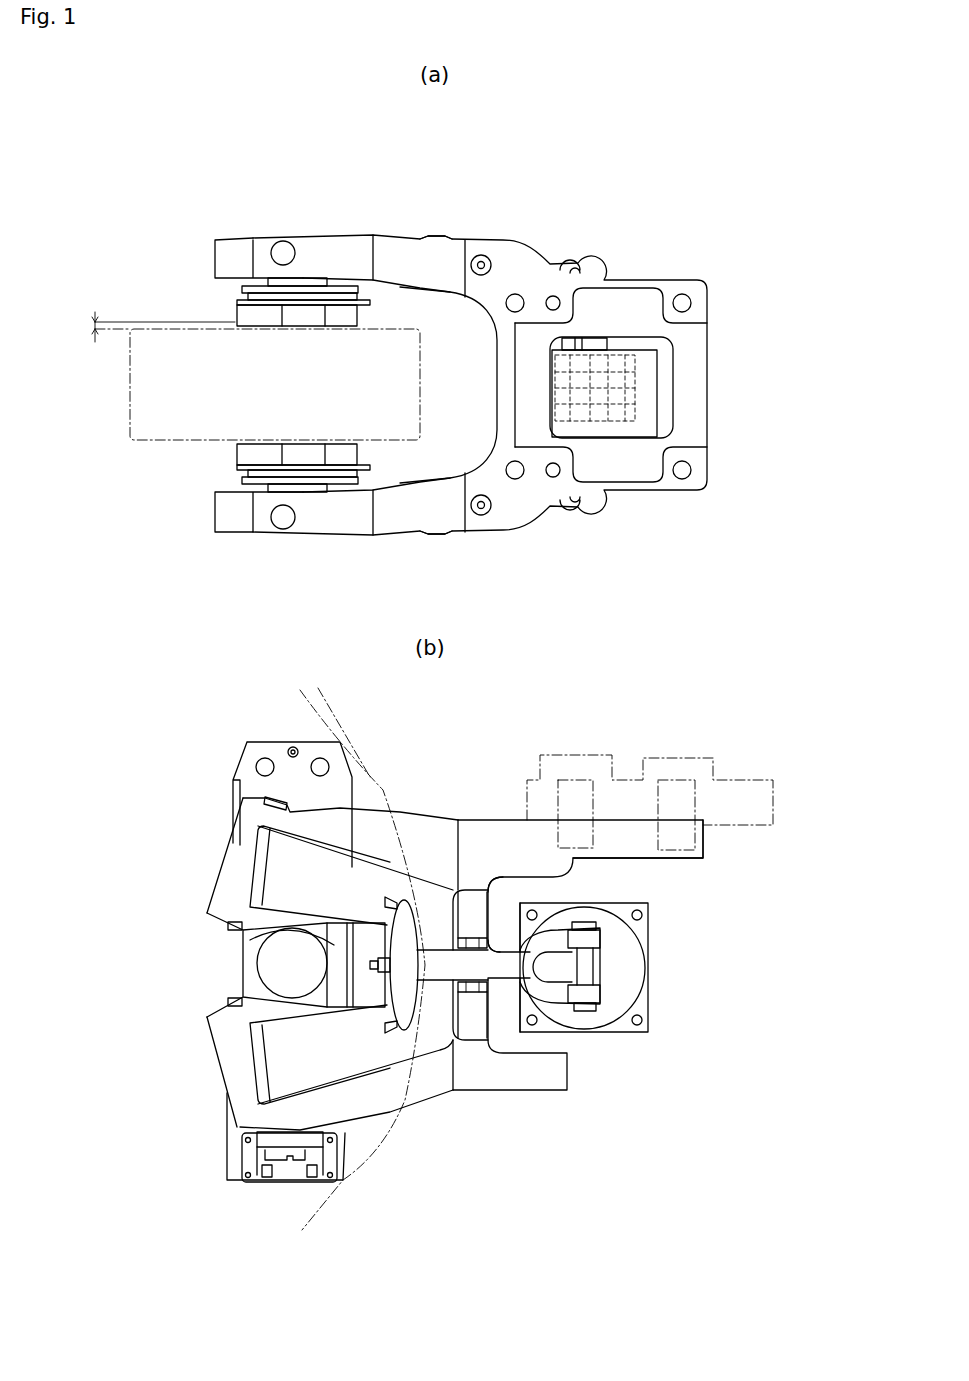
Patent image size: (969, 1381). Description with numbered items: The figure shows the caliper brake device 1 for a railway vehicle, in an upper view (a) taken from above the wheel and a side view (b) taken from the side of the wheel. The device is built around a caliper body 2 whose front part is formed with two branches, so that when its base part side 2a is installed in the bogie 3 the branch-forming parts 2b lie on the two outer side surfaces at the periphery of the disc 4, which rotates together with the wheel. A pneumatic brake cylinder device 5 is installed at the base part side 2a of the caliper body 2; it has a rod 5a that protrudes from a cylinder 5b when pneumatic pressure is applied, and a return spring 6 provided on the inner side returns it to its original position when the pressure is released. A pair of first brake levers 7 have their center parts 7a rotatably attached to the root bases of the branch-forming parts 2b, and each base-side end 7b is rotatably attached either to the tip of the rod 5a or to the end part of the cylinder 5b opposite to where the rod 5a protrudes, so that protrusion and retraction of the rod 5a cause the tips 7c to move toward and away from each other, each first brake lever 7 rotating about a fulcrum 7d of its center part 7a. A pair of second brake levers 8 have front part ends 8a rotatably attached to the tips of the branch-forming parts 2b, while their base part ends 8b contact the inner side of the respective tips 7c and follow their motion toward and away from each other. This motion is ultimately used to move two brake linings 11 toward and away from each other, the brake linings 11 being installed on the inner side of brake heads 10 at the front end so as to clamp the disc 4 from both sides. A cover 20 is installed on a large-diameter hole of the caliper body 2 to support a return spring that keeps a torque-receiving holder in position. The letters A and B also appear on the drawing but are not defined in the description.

The caliper brake device 1 is at (566, 186).
The caliper body 2 is at (514, 532).
The base part side 2a is at (637, 494).
The branch-forming part 2b is at (452, 252).
The bogie 3 is at (738, 782).
The disc 4 is at (188, 442).
The pneumatic brake cylinder device 5 is at (646, 348).
The rod 5a is at (604, 342).
The cylinder 5b is at (656, 428).
The return spring 6 is at (636, 388).
The first brake lever 7 is at (490, 950).
The center part 7a is at (466, 950).
The base-side end 7b is at (571, 262).
The tip 7c is at (385, 908).
The fulcrum 7d is at (483, 254).
The second brake lever 8 is at (374, 237).
The front part end 8a is at (266, 866).
The base part end 8b is at (428, 237).
The brake head 10 is at (262, 276).
The brake lining 11 is at (240, 312).
The cover 20 is at (268, 975).
The section line A- A is at (212, 1080).
The section line B- B is at (200, 965).